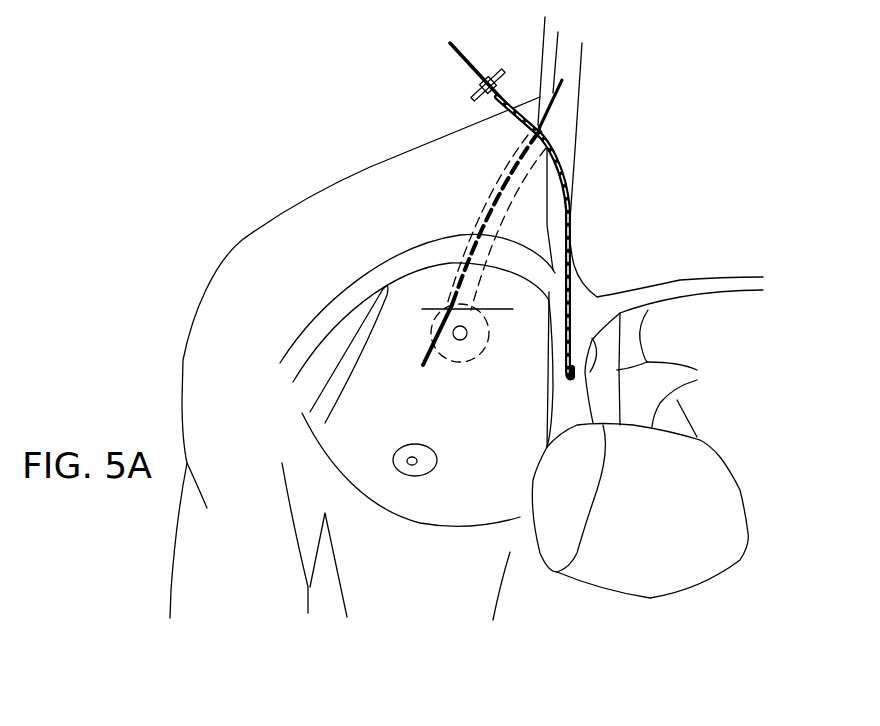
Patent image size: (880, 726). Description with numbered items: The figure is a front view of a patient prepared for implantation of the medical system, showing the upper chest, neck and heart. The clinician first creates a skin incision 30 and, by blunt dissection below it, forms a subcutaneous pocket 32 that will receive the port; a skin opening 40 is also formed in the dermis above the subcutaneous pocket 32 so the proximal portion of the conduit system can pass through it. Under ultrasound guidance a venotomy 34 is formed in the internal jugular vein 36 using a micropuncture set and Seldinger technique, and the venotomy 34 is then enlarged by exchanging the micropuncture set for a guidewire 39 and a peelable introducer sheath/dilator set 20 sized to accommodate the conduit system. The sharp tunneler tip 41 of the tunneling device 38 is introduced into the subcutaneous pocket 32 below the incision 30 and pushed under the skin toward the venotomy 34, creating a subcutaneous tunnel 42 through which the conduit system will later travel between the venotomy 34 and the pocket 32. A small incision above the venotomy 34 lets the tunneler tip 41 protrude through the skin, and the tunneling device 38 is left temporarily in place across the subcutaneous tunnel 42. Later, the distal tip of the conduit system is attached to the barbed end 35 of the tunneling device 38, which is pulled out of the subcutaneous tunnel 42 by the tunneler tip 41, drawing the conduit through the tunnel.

The peelable introducer sheath/dilator set 20 is at (470, 96).
The skin incision 30 is at (428, 306).
The subcutaneous pocket 32 is at (470, 350).
The venotomy 34 is at (550, 139).
The barbed end 35 is at (427, 368).
The internal jugular vein 36 is at (567, 98).
The tunneling device 38 is at (503, 180).
The guidewire 39 is at (463, 49).
The skin opening 40 is at (468, 335).
The sharp tunneler tip 41 is at (551, 93).
The subcutaneous tunnel 42 is at (522, 174).